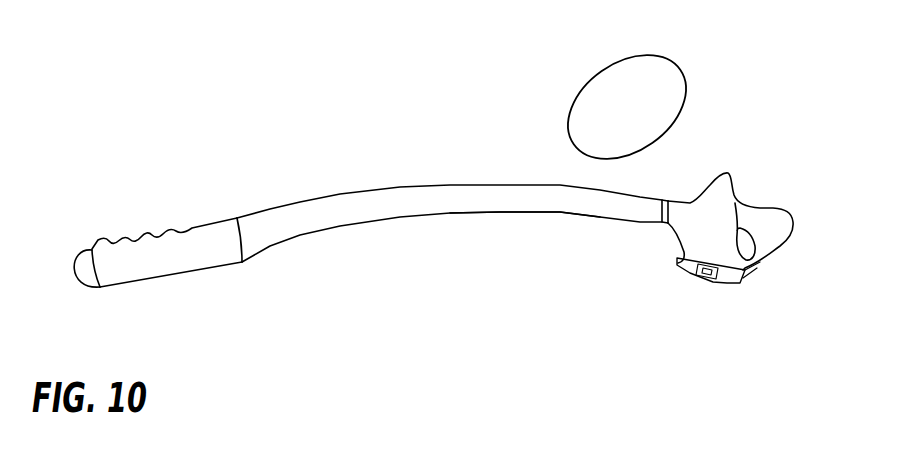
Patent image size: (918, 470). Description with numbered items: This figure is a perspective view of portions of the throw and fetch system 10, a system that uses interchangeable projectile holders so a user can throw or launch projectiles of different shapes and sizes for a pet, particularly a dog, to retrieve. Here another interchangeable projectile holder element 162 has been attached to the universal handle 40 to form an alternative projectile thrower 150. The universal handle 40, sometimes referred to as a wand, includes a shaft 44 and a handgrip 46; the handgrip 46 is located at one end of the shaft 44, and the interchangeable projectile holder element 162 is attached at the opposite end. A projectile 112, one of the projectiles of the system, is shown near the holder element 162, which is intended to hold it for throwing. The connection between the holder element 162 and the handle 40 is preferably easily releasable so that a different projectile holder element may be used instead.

The throw and fetch system 10 is at (98, 35).
The universal handle 40 is at (350, 159).
The shaft 44 is at (540, 197).
The handgrip 46 is at (203, 245).
The projectile 112 is at (623, 73).
The alternative projectile thrower 150 is at (520, 283).
The interchangeable projectile holder element 162 is at (778, 220).